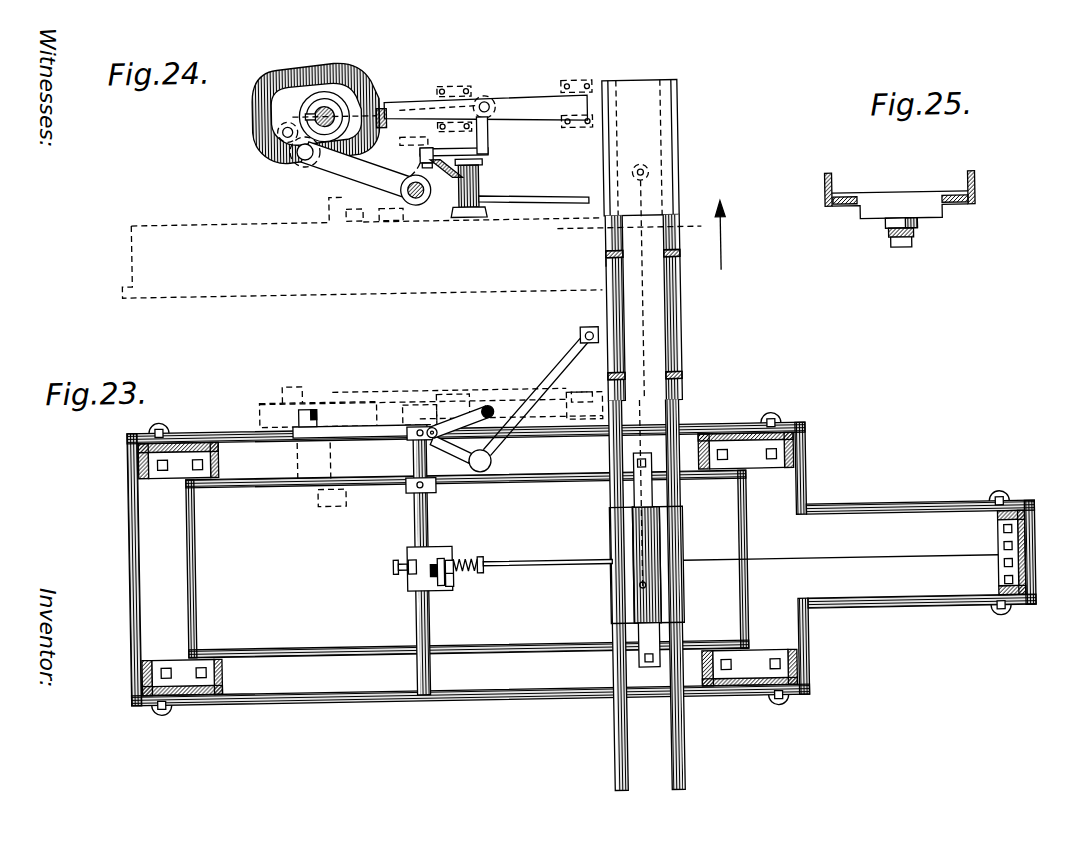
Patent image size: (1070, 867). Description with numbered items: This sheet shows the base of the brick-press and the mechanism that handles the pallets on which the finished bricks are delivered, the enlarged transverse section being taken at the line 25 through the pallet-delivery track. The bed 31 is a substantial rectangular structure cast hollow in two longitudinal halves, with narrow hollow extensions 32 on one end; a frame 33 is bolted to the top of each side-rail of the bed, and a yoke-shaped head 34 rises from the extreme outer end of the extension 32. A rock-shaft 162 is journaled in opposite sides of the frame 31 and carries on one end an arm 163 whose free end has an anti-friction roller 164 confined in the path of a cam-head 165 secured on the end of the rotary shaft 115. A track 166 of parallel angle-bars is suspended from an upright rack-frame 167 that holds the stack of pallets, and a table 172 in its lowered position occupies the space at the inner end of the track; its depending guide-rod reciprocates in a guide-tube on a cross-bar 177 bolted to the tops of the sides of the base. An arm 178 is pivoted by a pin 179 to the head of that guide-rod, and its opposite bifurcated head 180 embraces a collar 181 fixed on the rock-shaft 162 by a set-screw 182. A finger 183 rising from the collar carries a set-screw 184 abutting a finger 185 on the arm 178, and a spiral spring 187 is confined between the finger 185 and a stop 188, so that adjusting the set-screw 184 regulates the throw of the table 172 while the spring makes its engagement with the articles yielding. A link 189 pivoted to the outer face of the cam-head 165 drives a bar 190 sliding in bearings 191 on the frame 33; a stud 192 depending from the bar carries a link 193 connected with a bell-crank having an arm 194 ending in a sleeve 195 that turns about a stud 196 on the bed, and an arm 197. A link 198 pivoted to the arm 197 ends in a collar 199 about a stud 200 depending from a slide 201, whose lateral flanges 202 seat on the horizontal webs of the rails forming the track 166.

In FIG. 24, the section line 25 is at (724, 236).
In FIG. 24, the bed 31 is at (144, 235).
In FIG. 23, the bed 31 is at (150, 563).
In FIG. 23, the narrow hollow extension 32 is at (868, 526).
In FIG. 23, the frame 33 is at (213, 474).
In FIG. 23, the yoke-shaped head 34 is at (1010, 572).
In FIG. 24, the rotary shaft 115 is at (327, 108).
In FIG. 23, the rotary shaft 115 is at (304, 502).
In FIG. 24, the rock-shaft 162 is at (410, 198).
In FIG. 23, the rock-shaft 162 is at (414, 515).
In FIG. 24, the arm 163 is at (348, 168).
In FIG. 23, the arm 163 is at (343, 427).
In FIG. 24, the anti-friction roller 164 is at (283, 165).
In FIG. 23, the anti-friction roller 164 is at (309, 407).
In FIG. 24, the cam-head 165 is at (252, 112).
In FIG. 23, the cam-head 165 is at (258, 405).
In FIG. 24, the track 166 is at (606, 234).
In FIG. 25, the track 166 is at (825, 191).
In FIG. 23, the track 166 is at (672, 766).
In FIG. 24, the rack-frame 167 is at (662, 262).
In FIG. 23, the table 172 is at (678, 579).
In FIG. 23, the cross-bar 177 is at (641, 643).
In FIG. 23, the arm 178 is at (561, 563).
In FIG. 23, the pin 179 is at (638, 584).
In FIG. 23, the bifurcated head 180 is at (453, 527).
In FIG. 23, the collar 181 is at (403, 561).
In FIG. 23, the set-screw 182 is at (391, 561).
In FIG. 23, the finger 183 is at (431, 574).
In FIG. 23, the set-screw 184 is at (416, 571).
In FIG. 23, the finger 185 is at (445, 576).
In FIG. 23, the spiral spring 187 is at (478, 542).
In FIG. 23, the stop 188 is at (478, 568).
In FIG. 24, the link 189 is at (383, 103).
In FIG. 23, the link 189 is at (406, 391).
In FIG. 24, the bar 190 is at (485, 109).
In FIG. 24, the bearings 191 is at (458, 85).
In FIG. 23, the bearings 191 is at (462, 388).
In FIG. 24, the stud 192 is at (490, 156).
In FIG. 24, the link 193 is at (448, 152).
In FIG. 24, the arm 194 is at (437, 165).
In FIG. 23, the arm 194 is at (450, 419).
In FIG. 24, the sleeve 195 is at (482, 193).
In FIG. 23, the stud 196 is at (486, 467).
In FIG. 24, the arm 197 is at (532, 206).
In FIG. 23, the arm 197 is at (582, 349).
In FIG. 24, the link 198 is at (606, 265).
In FIG. 25, the link 198 is at (895, 235).
In FIG. 25, the collar 199 is at (917, 232).
In FIG. 25, the stud 200 is at (905, 248).
In FIG. 24, the slide 201 is at (642, 240).
In FIG. 25, the slide 201 is at (893, 205).
In FIG. 25, the lateral flanges 202 is at (843, 199).